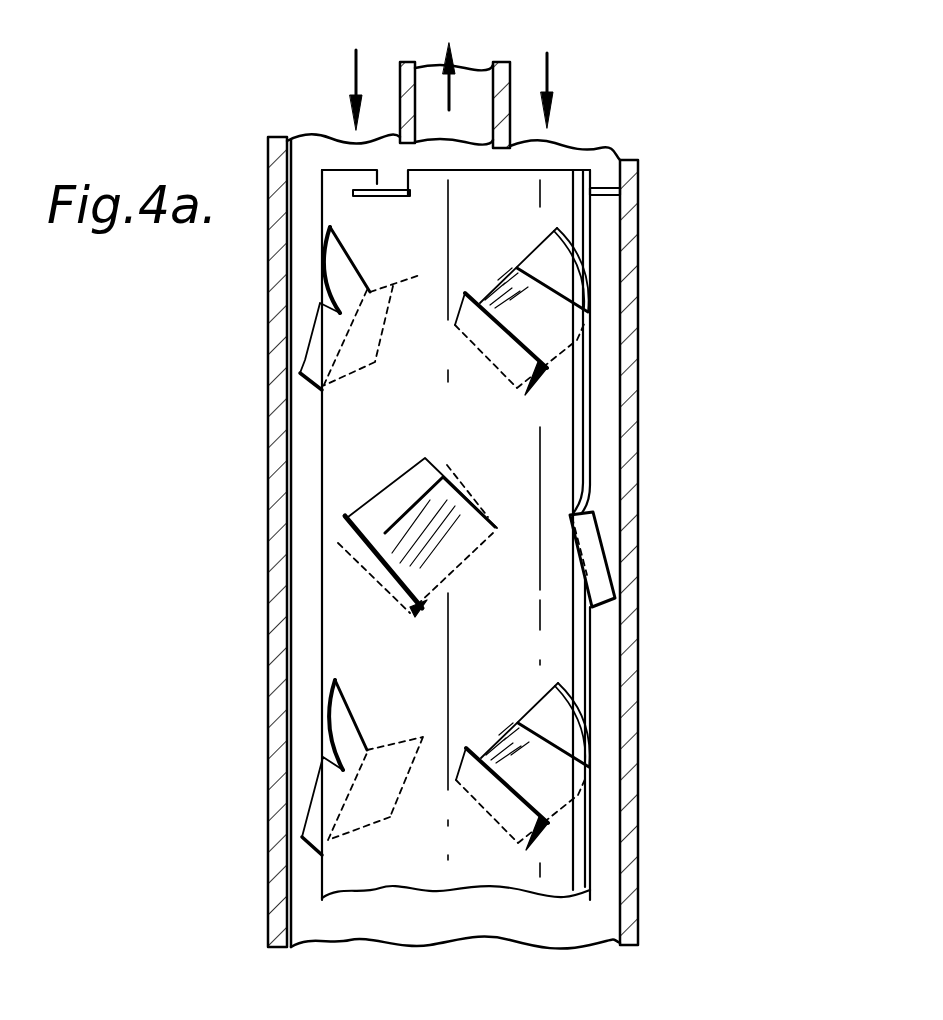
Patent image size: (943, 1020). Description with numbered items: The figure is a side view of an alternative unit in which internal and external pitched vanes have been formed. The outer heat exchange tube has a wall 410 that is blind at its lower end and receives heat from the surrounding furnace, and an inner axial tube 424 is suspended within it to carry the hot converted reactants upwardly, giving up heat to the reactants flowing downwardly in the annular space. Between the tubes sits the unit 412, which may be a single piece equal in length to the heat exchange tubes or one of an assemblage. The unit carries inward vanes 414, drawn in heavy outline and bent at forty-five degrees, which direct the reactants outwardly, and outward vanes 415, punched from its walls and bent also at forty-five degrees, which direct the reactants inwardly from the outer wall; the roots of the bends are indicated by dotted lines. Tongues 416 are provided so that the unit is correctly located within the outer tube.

The wall of outer heat exchange tube 410 is at (640, 207).
The unit 412 is at (412, 448).
The inward vanes 414 is at (362, 368).
The outward vanes 415 is at (300, 367).
The tongues 416 is at (398, 200).
The axial tube 424 is at (490, 105).